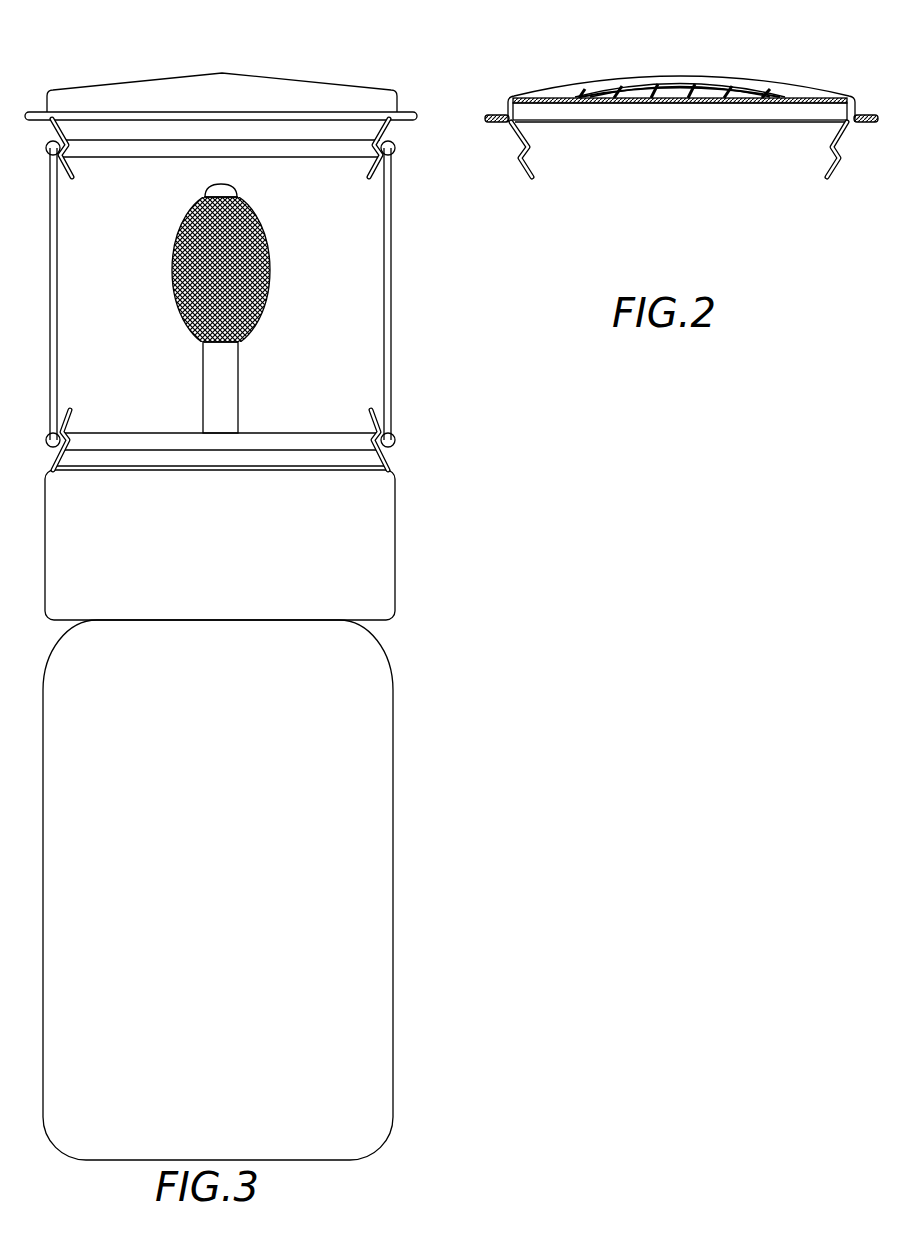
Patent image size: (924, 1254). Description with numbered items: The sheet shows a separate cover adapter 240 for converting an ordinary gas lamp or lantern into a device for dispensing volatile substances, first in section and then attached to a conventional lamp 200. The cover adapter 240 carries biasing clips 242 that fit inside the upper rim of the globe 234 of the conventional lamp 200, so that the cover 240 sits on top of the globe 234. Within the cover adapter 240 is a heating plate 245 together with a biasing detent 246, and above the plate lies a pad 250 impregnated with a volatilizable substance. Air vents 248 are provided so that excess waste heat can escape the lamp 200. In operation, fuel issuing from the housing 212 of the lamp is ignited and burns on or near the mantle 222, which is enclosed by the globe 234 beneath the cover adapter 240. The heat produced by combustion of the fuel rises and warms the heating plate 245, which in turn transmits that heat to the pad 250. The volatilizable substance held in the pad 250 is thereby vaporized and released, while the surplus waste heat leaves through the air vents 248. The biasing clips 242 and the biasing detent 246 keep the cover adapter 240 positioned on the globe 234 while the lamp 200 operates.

In FIG. 3, the conventional lamp 200 is at (288, 602).
In FIG. 3, the housing 212 is at (375, 852).
In FIG. 3, the mantle 222 is at (272, 275).
In FIG. 3, the globe 234 is at (386, 345).
In FIG. 3, the cover adapter 240 is at (148, 85).
In FIG. 2, the cover adapter 240 is at (677, 137).
In FIG. 3, the biasing clips 242 is at (75, 173).
In FIG. 2, the biasing clips 242 is at (530, 148).
In FIG. 2, the heating plate 245 is at (803, 104).
In FIG. 2, the biasing detent 246 is at (680, 87).
In FIG. 2, the air vents 248 is at (713, 81).
In FIG. 2, the pad 250 is at (585, 98).